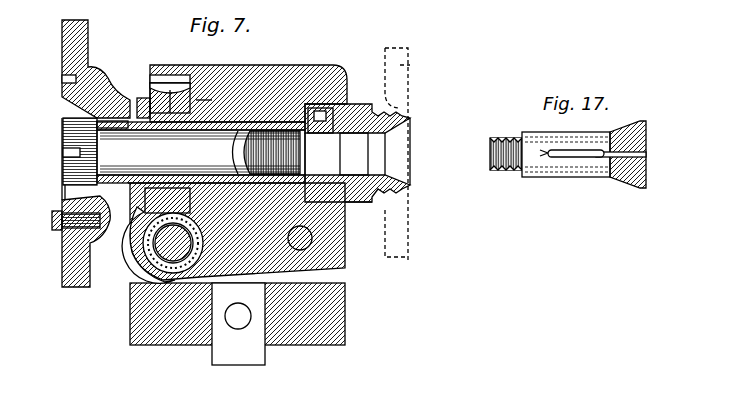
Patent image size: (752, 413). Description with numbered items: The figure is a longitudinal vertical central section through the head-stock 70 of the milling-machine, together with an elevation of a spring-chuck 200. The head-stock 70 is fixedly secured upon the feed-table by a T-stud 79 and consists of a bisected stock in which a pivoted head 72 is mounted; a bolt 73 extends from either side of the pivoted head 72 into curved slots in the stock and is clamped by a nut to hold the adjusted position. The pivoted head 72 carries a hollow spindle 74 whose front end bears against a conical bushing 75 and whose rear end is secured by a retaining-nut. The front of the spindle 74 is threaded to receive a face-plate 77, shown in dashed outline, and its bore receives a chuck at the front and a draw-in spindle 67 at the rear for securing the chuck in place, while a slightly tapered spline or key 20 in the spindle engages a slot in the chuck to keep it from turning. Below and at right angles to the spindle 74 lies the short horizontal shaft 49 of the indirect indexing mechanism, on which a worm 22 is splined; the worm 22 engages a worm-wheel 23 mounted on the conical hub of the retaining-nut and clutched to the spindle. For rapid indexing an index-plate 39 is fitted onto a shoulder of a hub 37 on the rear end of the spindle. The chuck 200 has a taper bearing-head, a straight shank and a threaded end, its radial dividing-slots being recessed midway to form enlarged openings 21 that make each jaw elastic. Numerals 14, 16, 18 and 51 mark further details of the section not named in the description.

In FIG. 7, the body 14 is at (236, 125).
In FIG. 7, the bushing 16 is at (108, 128).
In FIG. 7, the pin 18 is at (200, 100).
In FIG. 7, the spline or key 20 is at (320, 120).
In FIG. 17, the enlarged openings 21 is at (565, 152).
In FIG. 7, the worm 22 is at (142, 254).
In FIG. 7, the worm-wheel 23 is at (158, 91).
In FIG. 7, the hub 37 is at (68, 208).
In FIG. 7, the index-plate 39 is at (62, 48).
In FIG. 7, the short horizontal shaft 49 is at (160, 240).
In FIG. 7, the block 51 is at (138, 101).
In FIG. 7, the draw-in spindle 67 is at (201, 152).
In FIG. 7, the head-stock 70 is at (314, 47).
In FIG. 7, the pivoted head 72 is at (266, 70).
In FIG. 7, the bolt 73 is at (313, 239).
In FIG. 7, the hollow spindle 74 is at (356, 106).
In FIG. 7, the conical bushing 75 is at (346, 205).
In FIG. 7, the face-plate 77 is at (408, 68).
In FIG. 7, the T-stud 79 is at (238, 324).
In FIG. 17, the spring-chuck 200 is at (568, 156).